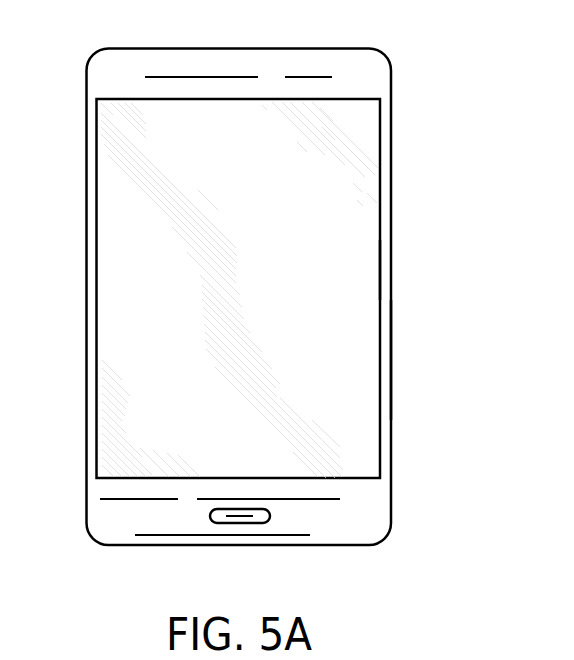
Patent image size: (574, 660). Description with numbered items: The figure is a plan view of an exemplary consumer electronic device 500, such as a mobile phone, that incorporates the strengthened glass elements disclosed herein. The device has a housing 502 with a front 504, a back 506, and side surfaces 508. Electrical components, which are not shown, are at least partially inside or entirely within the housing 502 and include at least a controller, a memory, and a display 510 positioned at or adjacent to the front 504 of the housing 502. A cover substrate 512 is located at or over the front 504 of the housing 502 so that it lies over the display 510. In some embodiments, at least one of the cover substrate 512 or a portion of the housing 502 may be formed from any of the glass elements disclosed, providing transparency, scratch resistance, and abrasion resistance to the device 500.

The consumer electronic device 500 is at (437, 90).
The housing 502 is at (100, 72).
The front surface 504 is at (372, 527).
The back surface 506 is at (113, 252).
The side surfaces 508 is at (392, 380).
The display 510 is at (364, 279).
The cover substrate 512 is at (117, 344).